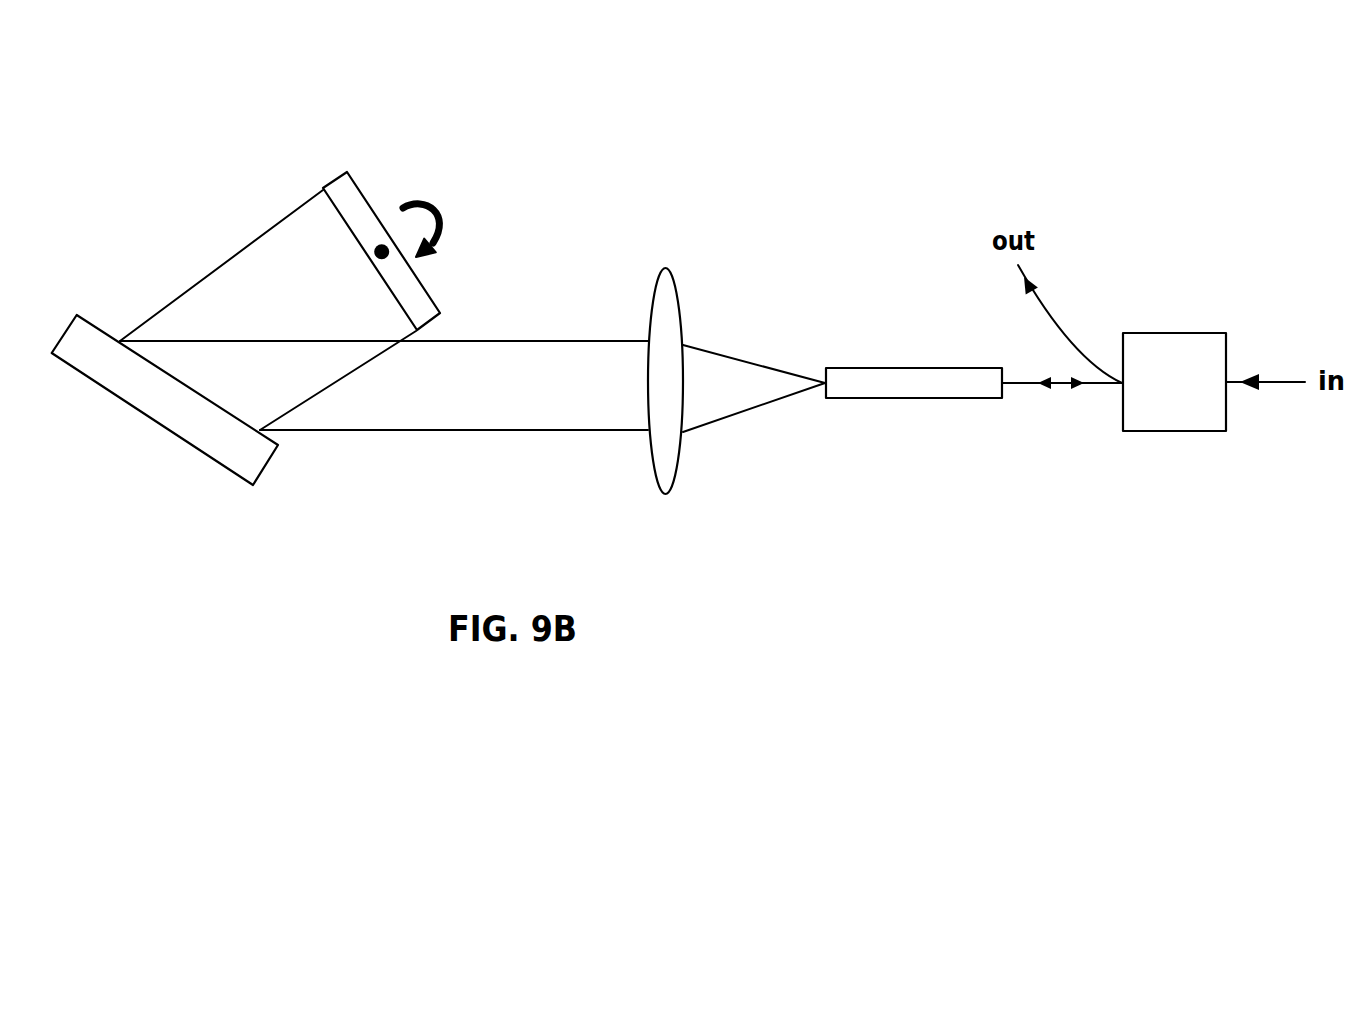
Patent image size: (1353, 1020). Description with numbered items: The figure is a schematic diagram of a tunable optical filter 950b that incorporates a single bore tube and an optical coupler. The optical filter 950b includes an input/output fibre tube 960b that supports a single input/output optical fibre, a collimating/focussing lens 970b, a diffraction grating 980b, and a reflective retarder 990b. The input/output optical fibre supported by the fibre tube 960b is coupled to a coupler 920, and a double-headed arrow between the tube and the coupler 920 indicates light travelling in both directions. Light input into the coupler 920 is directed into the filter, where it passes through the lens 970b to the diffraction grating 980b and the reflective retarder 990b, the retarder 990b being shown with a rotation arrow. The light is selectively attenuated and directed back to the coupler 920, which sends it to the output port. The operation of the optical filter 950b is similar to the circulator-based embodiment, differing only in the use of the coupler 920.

The optical filter 950b is at (674, 200).
The reflective retarder 990b is at (350, 170).
The diffraction grating 980b is at (270, 460).
The collimating/focussing lens 970b is at (665, 495).
The input/output fibre tube 960b is at (892, 368).
The coupler 920 is at (1168, 432).